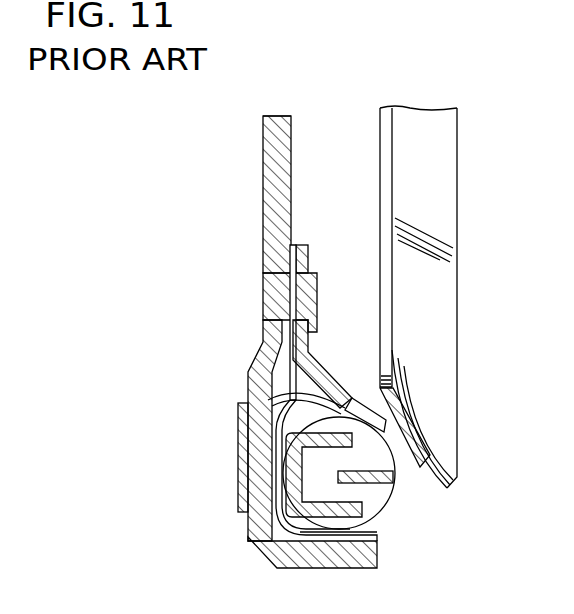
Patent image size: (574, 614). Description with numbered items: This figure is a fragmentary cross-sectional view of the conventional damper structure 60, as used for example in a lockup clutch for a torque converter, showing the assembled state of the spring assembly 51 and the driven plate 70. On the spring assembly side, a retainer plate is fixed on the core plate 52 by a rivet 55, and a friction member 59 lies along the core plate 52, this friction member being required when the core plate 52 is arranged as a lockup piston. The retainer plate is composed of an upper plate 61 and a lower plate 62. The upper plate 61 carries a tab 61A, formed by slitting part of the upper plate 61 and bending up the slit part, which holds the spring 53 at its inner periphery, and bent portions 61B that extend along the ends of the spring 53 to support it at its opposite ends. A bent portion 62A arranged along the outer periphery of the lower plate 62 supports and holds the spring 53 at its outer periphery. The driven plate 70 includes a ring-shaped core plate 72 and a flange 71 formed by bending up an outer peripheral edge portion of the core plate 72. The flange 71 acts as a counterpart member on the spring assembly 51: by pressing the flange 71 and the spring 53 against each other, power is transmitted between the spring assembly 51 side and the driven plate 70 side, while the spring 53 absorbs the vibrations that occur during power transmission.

The spring assembly 51 is at (279, 120).
The core plate 52 is at (278, 171).
The spring 53 is at (388, 503).
The rivet 55 is at (280, 302).
The friction member 59 is at (238, 455).
The damper structure 60 is at (460, 74).
The upper plate 61 is at (275, 392).
The tab 61A is at (360, 403).
The bent portion 61B is at (327, 515).
The lower plate 62 is at (370, 530).
The bent portion 62A is at (373, 571).
The driven plate 70 is at (440, 363).
The flange 71 is at (423, 487).
The core plate 72 is at (383, 195).